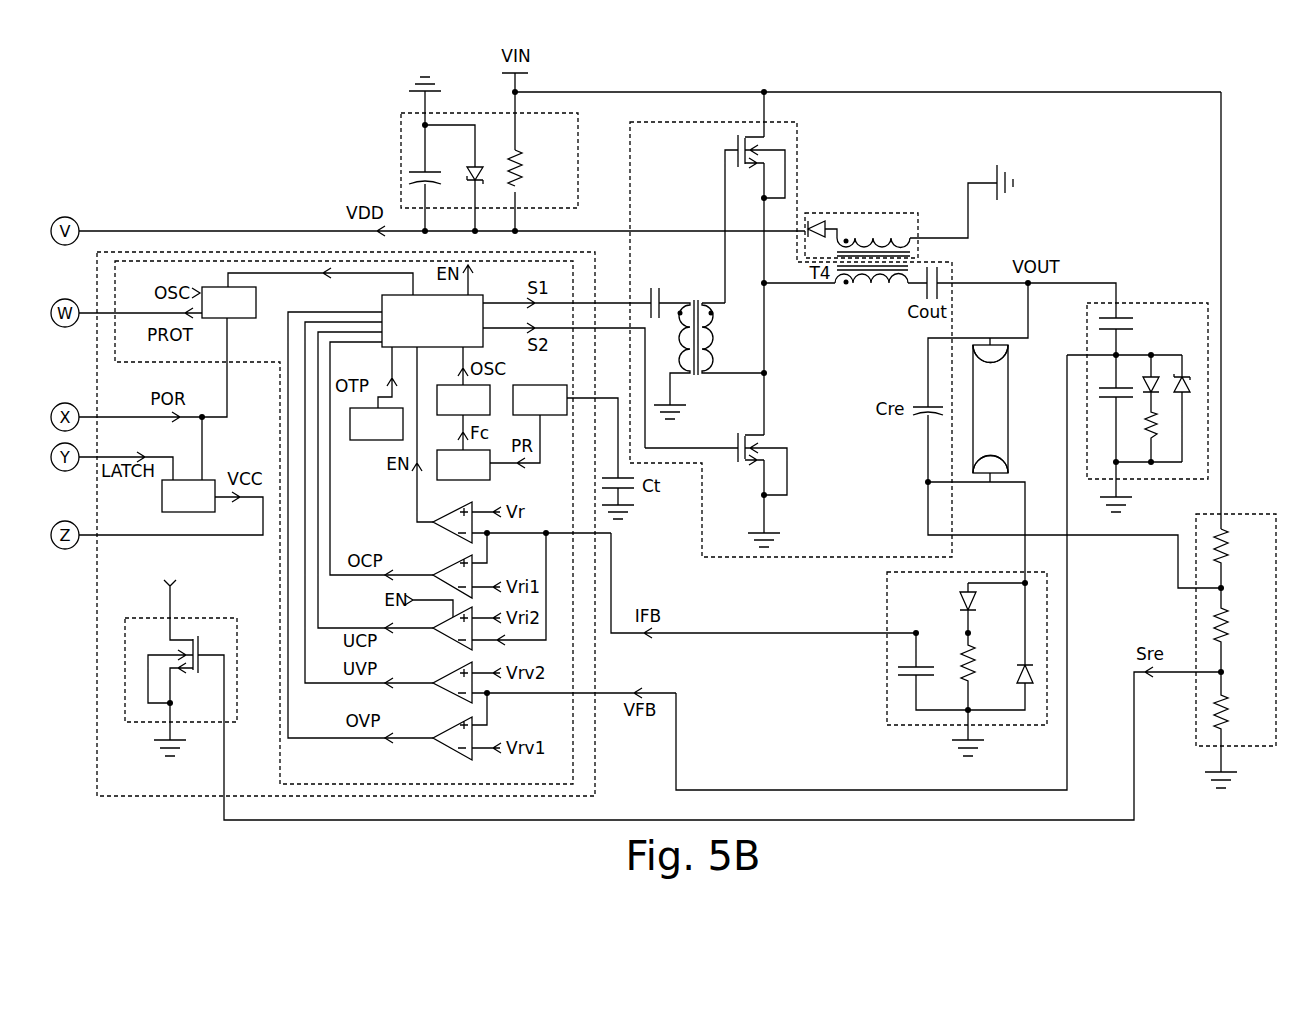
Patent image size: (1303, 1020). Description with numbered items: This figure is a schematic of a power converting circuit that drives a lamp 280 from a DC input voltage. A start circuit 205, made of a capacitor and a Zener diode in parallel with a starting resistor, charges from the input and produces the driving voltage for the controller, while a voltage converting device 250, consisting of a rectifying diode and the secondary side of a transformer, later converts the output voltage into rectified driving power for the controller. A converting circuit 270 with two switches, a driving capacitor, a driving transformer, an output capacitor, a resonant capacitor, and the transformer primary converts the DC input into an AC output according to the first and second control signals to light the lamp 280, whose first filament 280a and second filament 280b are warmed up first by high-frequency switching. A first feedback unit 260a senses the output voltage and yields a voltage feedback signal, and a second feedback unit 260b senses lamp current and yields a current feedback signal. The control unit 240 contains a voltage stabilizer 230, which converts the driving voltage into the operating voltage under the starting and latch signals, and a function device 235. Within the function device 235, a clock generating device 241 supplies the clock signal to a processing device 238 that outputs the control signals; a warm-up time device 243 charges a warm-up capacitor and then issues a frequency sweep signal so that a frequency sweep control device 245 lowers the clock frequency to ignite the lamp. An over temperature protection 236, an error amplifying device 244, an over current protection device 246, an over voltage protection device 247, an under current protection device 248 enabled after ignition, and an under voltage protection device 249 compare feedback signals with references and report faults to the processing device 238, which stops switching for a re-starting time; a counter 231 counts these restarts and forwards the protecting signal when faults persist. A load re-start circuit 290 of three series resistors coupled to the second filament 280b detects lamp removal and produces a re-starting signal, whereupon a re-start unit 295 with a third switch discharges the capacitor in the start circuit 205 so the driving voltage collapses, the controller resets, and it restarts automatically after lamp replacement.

The start circuit 205 is at (404, 166).
The voltage stabilizer 230 is at (175, 508).
The counter 231 is at (216, 314).
The function device 235 is at (150, 362).
The over temperature protection 236 is at (363, 436).
The processing device 238 is at (418, 332).
The control unit 240 is at (97, 740).
The clock generating device 241 is at (449, 412).
The warm-up time device 243 is at (526, 412).
The error amplifying device 244 is at (442, 522).
The frequency sweep control device 245 is at (449, 477).
The over current protection device 246 is at (444, 574).
The over voltage protection device 247 is at (444, 746).
The under current protection device 248 is at (444, 637).
The under voltage protection device 249 is at (444, 690).
The voltage converting device 250 is at (890, 220).
The first feedback unit 260a is at (1147, 307).
The second feedback unit 260b is at (887, 600).
The converting circuit 270 is at (797, 147).
The lamp 280 is at (1008, 406).
The first filament 280a is at (992, 341).
The second filament 280b is at (995, 482).
The load re-start circuit 290 is at (1276, 746).
The re-start unit 295 is at (220, 618).